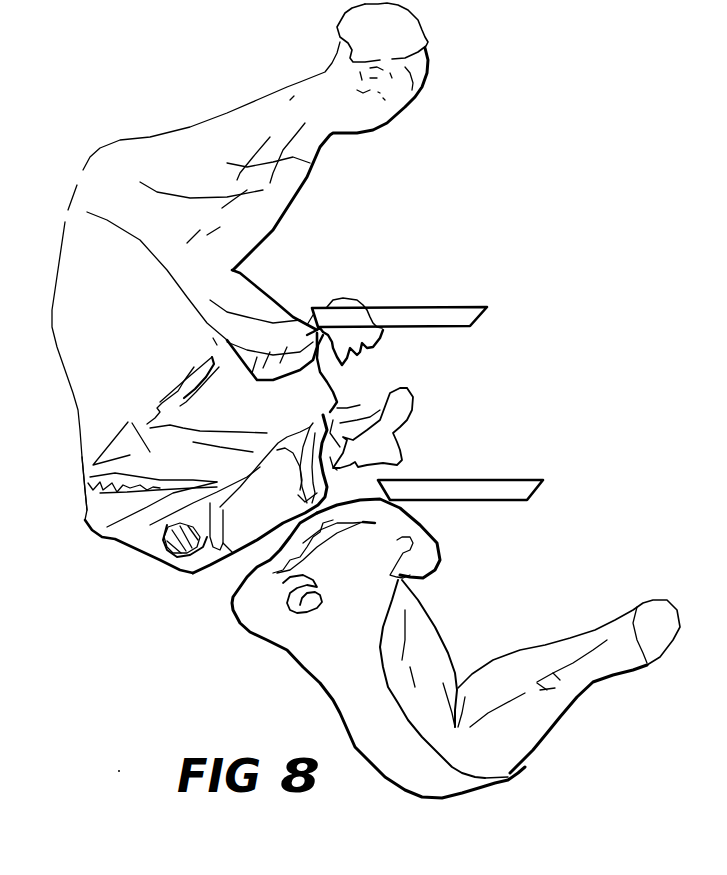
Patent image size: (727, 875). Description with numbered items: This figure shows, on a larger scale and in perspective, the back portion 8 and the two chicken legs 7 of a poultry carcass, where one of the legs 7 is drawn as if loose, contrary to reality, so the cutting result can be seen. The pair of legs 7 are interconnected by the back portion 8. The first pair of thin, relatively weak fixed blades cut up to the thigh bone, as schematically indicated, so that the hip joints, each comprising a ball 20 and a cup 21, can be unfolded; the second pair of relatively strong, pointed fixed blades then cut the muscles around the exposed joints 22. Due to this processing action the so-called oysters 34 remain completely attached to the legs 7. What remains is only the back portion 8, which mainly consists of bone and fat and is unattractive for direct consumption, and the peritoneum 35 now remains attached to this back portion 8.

The chicken legs 7 is at (310, 163).
The back portion 8 is at (82, 518).
The ball 20 is at (287, 598).
The cup 21 is at (192, 558).
The exposed joints 22 is at (165, 577).
The oysters 34 is at (257, 623).
The peritoneum 35 is at (400, 407).